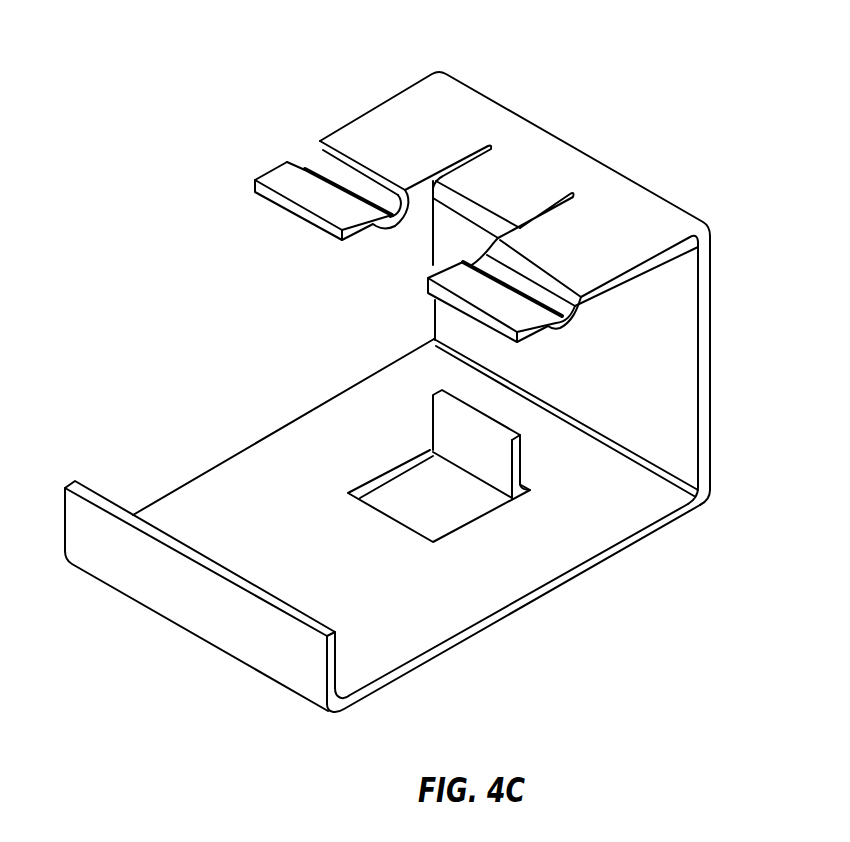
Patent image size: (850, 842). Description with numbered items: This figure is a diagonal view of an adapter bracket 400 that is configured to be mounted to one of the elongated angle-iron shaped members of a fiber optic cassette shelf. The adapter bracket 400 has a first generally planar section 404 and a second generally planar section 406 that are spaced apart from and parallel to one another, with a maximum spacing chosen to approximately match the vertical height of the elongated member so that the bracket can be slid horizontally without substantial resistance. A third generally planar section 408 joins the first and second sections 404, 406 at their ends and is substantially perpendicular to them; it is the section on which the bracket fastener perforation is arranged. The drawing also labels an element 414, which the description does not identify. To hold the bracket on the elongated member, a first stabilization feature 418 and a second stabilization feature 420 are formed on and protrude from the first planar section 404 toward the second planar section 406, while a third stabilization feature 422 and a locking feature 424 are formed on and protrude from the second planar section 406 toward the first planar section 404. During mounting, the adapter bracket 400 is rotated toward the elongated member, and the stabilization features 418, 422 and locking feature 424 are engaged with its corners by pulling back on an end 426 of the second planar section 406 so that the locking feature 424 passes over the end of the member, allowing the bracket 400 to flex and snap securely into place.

The adapter bracket 400 is at (160, 227).
The first generally planar section 404 is at (443, 603).
The second generally planar section 406 is at (405, 123).
The third generally planar section 408 is at (648, 325).
The side bend / wall edge 414 is at (714, 369).
The first stabilization feature 418 is at (482, 448).
The second stabilization feature 420 is at (175, 642).
The third stabilization feature 422 is at (442, 239).
The locking feature 424 is at (340, 178).
The end 426 is at (298, 212).